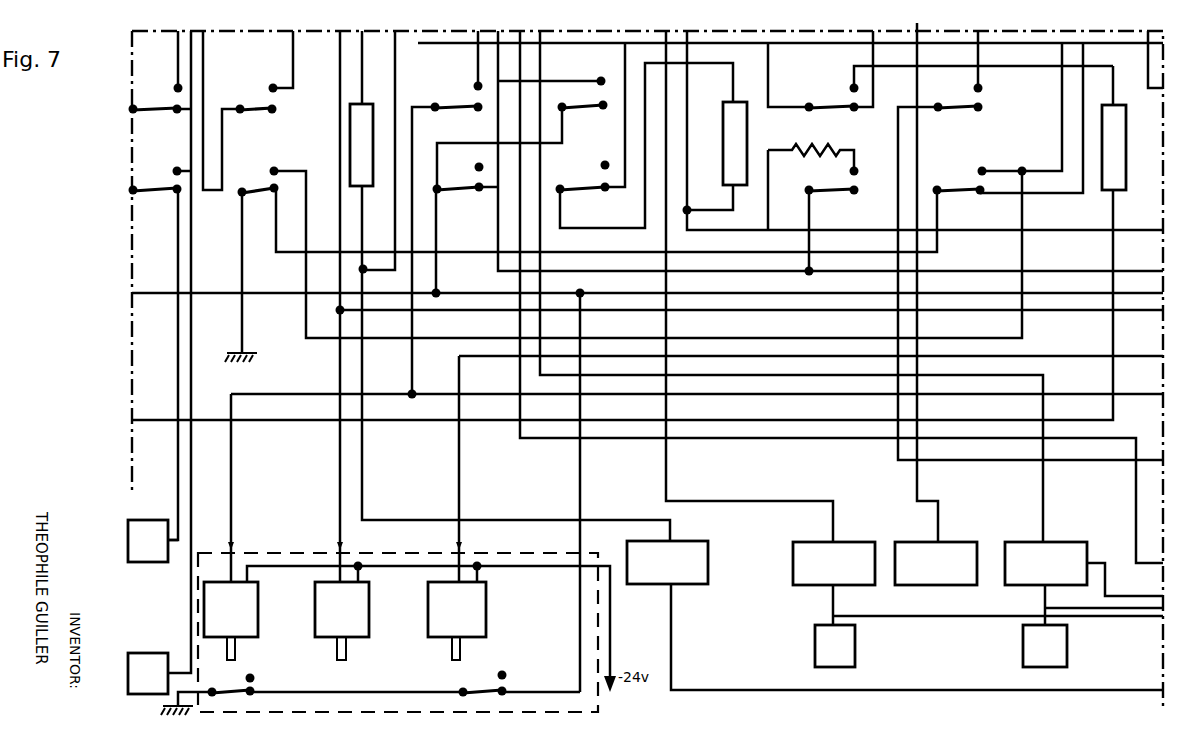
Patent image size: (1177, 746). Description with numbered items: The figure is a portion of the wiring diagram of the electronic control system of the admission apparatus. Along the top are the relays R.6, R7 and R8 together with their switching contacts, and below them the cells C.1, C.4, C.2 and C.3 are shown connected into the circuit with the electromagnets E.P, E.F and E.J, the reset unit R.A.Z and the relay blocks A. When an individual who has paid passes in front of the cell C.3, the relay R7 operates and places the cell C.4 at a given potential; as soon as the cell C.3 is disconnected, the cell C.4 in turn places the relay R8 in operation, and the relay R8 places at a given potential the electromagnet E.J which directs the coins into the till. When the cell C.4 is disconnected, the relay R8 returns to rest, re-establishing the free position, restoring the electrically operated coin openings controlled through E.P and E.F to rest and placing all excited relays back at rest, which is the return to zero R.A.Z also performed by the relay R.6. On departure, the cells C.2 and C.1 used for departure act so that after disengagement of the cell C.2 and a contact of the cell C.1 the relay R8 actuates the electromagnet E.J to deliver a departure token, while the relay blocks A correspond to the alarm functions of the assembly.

The relay R.6 is at (341, 145).
The relay R7 is at (722, 143).
The relay R8 is at (1125, 147).
The cell C.1 is at (153, 541).
The cell C.4 is at (148, 673).
The electromagnet E.P is at (231, 621).
The electromagnet E.F is at (342, 621).
The electro-token electromagnet E.J is at (457, 621).
The return to zero R.A.Z is at (667, 562).
The alarm relay means A is at (940, 563).
The cell C.2 is at (835, 646).
The cell C.3 is at (1045, 646).